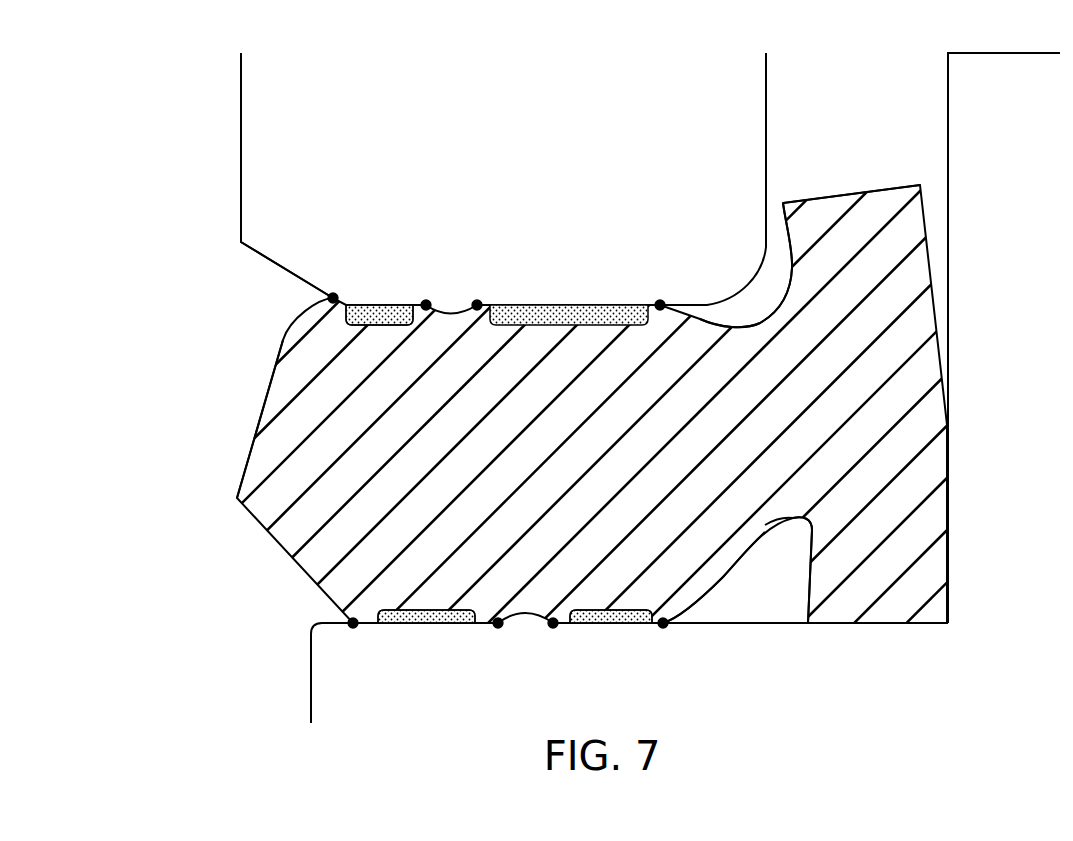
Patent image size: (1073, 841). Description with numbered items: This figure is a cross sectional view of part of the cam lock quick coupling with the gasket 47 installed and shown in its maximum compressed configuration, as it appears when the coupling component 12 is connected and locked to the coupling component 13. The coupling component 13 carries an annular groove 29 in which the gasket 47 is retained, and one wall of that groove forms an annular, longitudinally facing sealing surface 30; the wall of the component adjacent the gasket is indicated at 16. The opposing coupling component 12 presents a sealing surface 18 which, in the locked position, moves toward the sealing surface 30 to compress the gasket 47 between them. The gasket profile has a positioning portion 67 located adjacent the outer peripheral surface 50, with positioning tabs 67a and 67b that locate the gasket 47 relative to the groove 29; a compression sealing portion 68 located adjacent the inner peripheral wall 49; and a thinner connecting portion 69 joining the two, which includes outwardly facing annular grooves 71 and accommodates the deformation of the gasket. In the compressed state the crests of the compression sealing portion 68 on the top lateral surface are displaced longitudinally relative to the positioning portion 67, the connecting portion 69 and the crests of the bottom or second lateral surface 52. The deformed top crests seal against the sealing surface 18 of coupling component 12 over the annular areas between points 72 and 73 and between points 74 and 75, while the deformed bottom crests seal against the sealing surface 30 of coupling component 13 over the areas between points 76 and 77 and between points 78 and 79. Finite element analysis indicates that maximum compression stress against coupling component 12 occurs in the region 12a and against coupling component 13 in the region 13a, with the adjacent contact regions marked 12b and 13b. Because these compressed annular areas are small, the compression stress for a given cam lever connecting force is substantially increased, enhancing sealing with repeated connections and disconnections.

The coupling component 12 is at (338, 104).
The region of maximum compression stress 12a is at (545, 305).
The second contact pad 12b is at (386, 305).
The coupling component 13 is at (434, 717).
The region of maximum compression stress 13a is at (615, 625).
The fourth contact pad 13b is at (423, 623).
The housing wall 16 is at (272, 172).
The sealing surface 18 is at (610, 317).
The groove 29 is at (940, 195).
The sealing surface 30 is at (727, 612).
The gasket 47 is at (236, 332).
The inner peripheral wall 49 is at (242, 458).
The outer peripheral surface 50 is at (948, 468).
The second lateral surface 52 is at (723, 577).
The positioning portion 67 is at (857, 381).
The positioning tab 67a is at (807, 225).
The positioning tab 67b is at (813, 578).
The compression sealing portion 68 is at (447, 424).
The connecting portion 69 is at (754, 429).
The annular grooves 71 is at (770, 317).
The point 72 is at (660, 305).
The point 73 is at (477, 305).
The point 74 is at (427, 303).
The point 75 is at (333, 298).
The point 76 is at (663, 625).
The point 77 is at (553, 624).
The point 78 is at (498, 625).
The point 79 is at (353, 623).